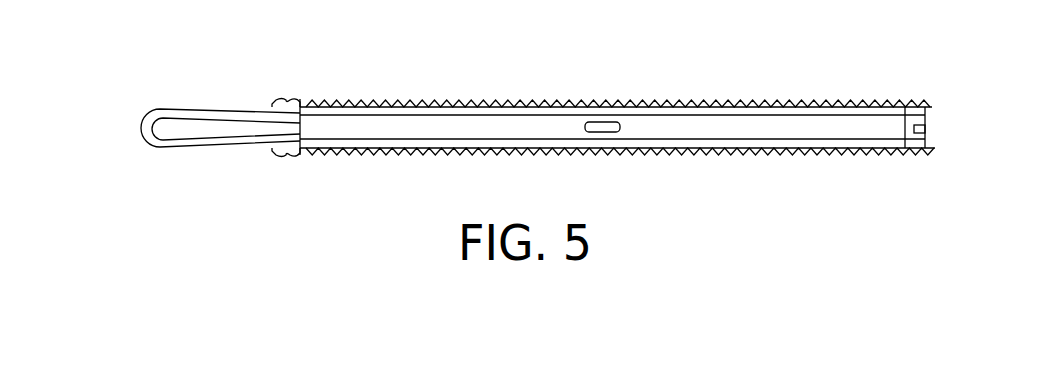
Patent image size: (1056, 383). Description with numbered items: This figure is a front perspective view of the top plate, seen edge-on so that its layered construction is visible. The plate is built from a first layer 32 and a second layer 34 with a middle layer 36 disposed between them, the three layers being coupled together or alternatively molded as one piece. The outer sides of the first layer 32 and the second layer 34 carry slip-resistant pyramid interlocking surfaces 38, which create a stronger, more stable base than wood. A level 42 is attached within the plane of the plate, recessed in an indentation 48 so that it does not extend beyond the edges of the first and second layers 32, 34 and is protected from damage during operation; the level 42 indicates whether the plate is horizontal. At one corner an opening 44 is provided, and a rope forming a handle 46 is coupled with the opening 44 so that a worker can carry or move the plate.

The first layer 32 is at (925, 112).
The second layer 34 is at (930, 145).
The middle layer 36 is at (925, 130).
The pyramid interlocking surface 38 is at (788, 102).
The level 42 is at (615, 130).
The opening 44 is at (282, 137).
The rope handle 46 is at (150, 112).
The indentation 48 is at (588, 128).